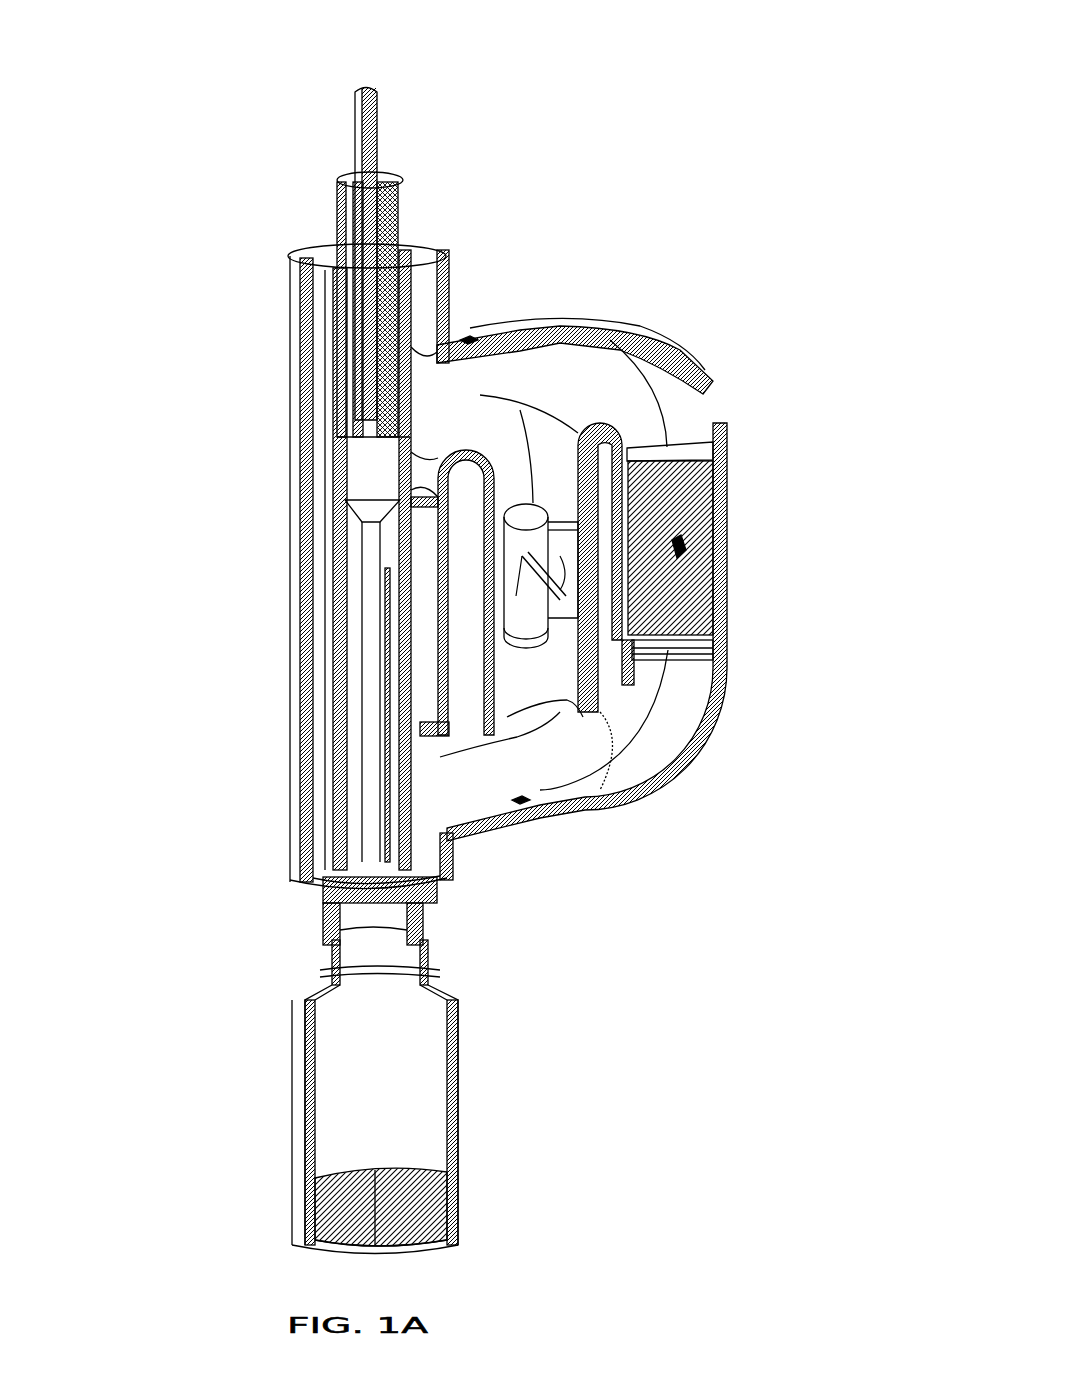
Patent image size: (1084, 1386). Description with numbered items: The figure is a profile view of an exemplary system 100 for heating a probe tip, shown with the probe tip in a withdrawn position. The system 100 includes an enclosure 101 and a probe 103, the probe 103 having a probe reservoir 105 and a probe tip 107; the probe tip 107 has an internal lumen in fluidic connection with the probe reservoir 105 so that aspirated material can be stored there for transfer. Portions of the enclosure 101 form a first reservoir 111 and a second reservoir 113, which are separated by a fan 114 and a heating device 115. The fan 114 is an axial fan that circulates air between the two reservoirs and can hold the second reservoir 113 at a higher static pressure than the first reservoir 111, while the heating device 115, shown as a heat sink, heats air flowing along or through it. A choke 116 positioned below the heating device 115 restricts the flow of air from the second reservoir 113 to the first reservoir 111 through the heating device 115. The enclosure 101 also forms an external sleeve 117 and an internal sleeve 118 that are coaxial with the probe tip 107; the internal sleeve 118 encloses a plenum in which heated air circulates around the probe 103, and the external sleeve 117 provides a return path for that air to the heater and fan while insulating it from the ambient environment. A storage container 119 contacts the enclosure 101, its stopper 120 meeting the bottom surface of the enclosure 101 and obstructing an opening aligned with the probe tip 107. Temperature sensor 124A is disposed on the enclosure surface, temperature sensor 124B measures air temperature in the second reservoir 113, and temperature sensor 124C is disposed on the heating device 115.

The system 100 is at (660, 300).
The enclosure 101 is at (493, 338).
The probe 103 is at (393, 200).
The probe reservoir 105 is at (345, 235).
The probe tip 107 is at (362, 733).
The first reservoir 111 is at (506, 418).
The second reservoir 113 is at (522, 750).
The fan 114 is at (548, 520).
The heating device 115 is at (686, 519).
The choke 116 is at (666, 652).
The external sleeve 117 is at (298, 347).
The internal sleeve 118 is at (338, 530).
The storage container 119 is at (454, 1024).
The stopper 120 is at (416, 907).
The temperature sensor 124A is at (470, 325).
The temperature sensor 124B is at (523, 808).
The temperature sensor 124C is at (690, 548).